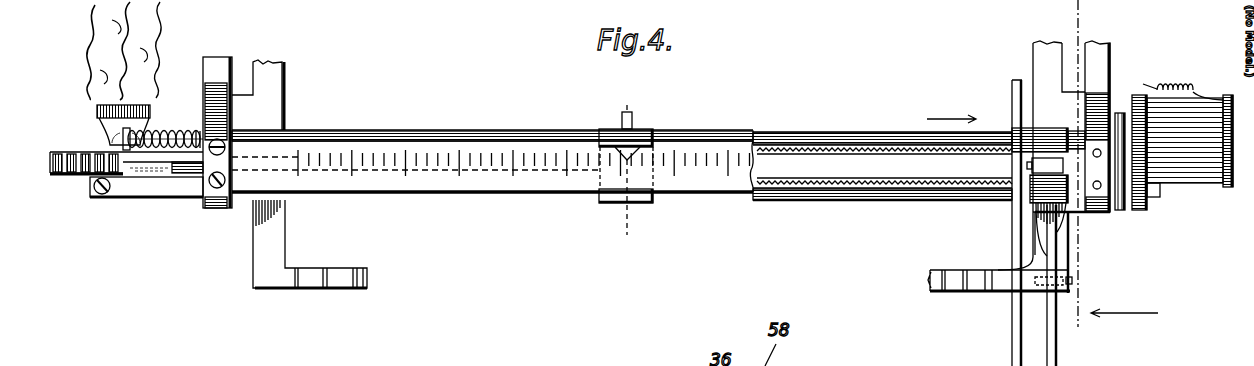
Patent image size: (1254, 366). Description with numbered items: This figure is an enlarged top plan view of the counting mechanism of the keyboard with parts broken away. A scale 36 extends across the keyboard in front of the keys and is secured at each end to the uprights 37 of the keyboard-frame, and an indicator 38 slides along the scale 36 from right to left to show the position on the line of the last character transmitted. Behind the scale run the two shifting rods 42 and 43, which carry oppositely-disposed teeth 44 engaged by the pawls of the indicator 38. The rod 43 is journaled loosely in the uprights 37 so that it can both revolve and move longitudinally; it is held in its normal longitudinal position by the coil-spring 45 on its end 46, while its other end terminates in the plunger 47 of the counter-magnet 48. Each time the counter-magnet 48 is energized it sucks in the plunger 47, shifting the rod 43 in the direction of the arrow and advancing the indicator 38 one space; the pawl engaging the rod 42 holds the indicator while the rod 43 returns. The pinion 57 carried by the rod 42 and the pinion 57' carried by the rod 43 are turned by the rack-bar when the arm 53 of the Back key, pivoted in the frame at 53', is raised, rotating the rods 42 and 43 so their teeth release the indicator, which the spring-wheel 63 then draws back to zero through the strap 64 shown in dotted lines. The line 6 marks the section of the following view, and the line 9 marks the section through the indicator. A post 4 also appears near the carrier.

The standard post 4 is at (1013, 315).
The section line 6 is at (1065, 285).
The section line 9 is at (626, 169).
The scale 36 is at (372, 146).
The upright 37 is at (224, 64).
The indicator 38 is at (646, 134).
The shifting rod 42 is at (931, 200).
The shifting rod 43 is at (859, 144).
The teeth 44 is at (884, 166).
The coil-spring 45 is at (186, 137).
The end of rod 46 is at (197, 132).
The plunger 47 is at (1125, 140).
The counter-magnet 48 is at (1150, 156).
The arm 53 is at (1043, 183).
The pivot 53' is at (1020, 282).
The pinion 57 is at (1071, 200).
The pinion 57' is at (1040, 128).
The spring-wheel 63 is at (81, 147).
The strap 64 is at (155, 167).